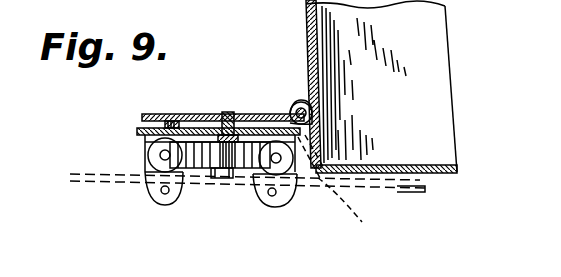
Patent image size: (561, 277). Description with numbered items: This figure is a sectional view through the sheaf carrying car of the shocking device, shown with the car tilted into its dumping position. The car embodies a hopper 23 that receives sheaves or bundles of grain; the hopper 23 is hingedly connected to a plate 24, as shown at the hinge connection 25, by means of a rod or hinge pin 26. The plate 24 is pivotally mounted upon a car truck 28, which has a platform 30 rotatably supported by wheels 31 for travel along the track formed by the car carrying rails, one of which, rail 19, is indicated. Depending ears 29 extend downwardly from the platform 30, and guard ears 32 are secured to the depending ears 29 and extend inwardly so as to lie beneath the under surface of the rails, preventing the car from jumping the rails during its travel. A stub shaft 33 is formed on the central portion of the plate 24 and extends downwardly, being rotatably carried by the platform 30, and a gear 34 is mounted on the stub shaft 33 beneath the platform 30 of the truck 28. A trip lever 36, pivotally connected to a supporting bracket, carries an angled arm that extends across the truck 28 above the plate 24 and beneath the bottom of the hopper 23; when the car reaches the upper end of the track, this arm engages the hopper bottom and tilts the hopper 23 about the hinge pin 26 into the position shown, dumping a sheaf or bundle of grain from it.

The car carrying rail 19 is at (72, 190).
The hopper 23 is at (423, 95).
The plate 24 is at (186, 114).
The hinge connection 25 is at (298, 96).
The hinge pin 26 is at (292, 107).
The car truck 28 is at (138, 128).
The depending ears 29 is at (158, 204).
The platform 30 is at (147, 143).
The wheels 31 is at (146, 178).
The guard ears 32 is at (171, 196).
The stub shaft 33 is at (224, 117).
The gear 34 is at (198, 176).
The trip lever 36 is at (342, 191).